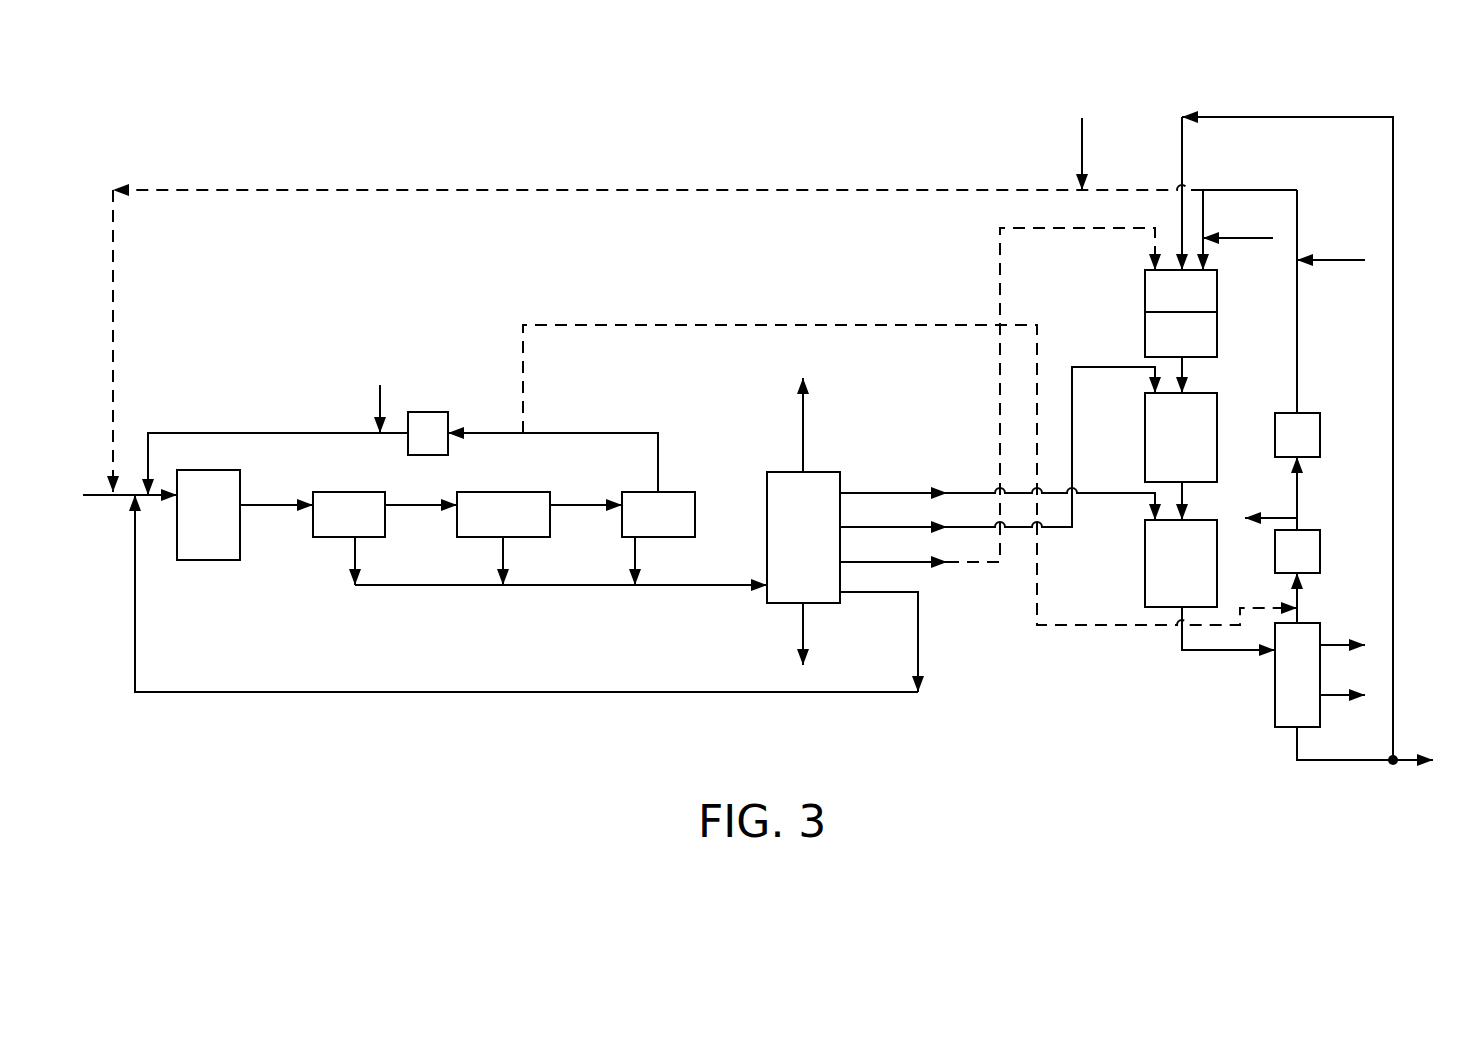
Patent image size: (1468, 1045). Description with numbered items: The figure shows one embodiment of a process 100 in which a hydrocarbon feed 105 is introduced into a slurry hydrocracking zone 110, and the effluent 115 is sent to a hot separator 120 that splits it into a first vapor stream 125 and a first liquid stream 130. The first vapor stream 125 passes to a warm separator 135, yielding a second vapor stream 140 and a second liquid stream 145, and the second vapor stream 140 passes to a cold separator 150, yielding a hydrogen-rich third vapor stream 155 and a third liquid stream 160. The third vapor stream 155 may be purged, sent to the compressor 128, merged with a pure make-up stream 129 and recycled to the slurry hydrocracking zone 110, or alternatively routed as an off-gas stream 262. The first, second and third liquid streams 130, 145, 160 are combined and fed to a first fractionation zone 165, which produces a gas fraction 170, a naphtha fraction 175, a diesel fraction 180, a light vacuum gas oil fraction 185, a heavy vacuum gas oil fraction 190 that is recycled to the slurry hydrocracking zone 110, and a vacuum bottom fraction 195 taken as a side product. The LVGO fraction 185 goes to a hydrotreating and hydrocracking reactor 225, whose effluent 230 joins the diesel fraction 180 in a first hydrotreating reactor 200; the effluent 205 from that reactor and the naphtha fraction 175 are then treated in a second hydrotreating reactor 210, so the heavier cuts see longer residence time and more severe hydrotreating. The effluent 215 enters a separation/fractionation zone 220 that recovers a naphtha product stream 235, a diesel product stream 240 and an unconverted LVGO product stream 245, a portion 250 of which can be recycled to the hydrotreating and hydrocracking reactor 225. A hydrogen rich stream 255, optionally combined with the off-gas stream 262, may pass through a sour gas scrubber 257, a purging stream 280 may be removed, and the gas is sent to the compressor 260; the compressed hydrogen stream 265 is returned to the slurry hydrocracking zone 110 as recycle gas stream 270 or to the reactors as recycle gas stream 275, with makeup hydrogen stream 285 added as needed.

The process 100 is at (183, 83).
The hydrocarbon feed 105 is at (101, 497).
The slurry hydrocracking zone 110 is at (227, 470).
The effluent 115 is at (277, 507).
The hot separator 120 is at (372, 492).
The first vapor stream 125 is at (417, 507).
The compressor 128 is at (428, 412).
The make-up stream 129 is at (380, 390).
The first liquid stream 130 is at (354, 553).
The warm separator 135 is at (535, 492).
The second vapor stream 140 is at (584, 507).
The second liquid stream 145 is at (502, 553).
The cold separator 150 is at (680, 492).
The third vapor stream 155 is at (645, 433).
The third liquid stream 160 is at (634, 553).
The first fractionation zone 165 is at (834, 472).
The gas fraction 170 is at (803, 436).
The naphtha fraction 175 is at (847, 491).
The diesel fraction 180 is at (847, 525).
The light vacuum gas oil fraction 185 is at (847, 560).
The heavy vacuum gas oil fraction 190 is at (847, 590).
The vacuum bottom fraction 195 is at (803, 628).
The first hydrotreating reactor 200 is at (1145, 415).
The effluent 205 is at (1183, 500).
The second hydrotreating reactor 210 is at (1145, 540).
The effluent 215 is at (1181, 640).
The separation/fractionation zone 220 is at (1275, 707).
The hydrotreating and hydrocracking reactor 225 is at (1218, 330).
The effluent 230 is at (1183, 373).
The naphtha product stream 235 is at (1330, 647).
The diesel product stream 240 is at (1333, 697).
The unconverted LVGO product stream 245 is at (1328, 762).
The portion of unconverted LVGO product stream 250 is at (1393, 415).
The hydrogen rich stream 255 is at (1300, 603).
The sour gas scrubber 257 is at (1321, 558).
The compressor 260 is at (1305, 413).
The off-gas stream 262 is at (523, 350).
The compressed hydrogen stream 265 is at (1297, 282).
The recycle gas stream 270 is at (292, 433).
The recycle gas stream 275 is at (1205, 210).
The purging stream 280 is at (1290, 517).
The makeup hydrogen stream 285 is at (1083, 127).